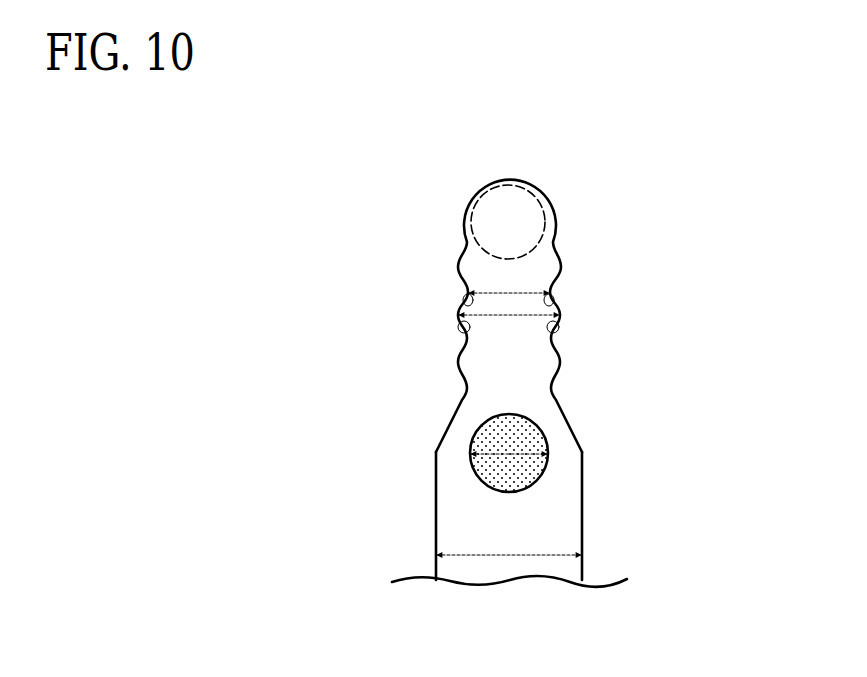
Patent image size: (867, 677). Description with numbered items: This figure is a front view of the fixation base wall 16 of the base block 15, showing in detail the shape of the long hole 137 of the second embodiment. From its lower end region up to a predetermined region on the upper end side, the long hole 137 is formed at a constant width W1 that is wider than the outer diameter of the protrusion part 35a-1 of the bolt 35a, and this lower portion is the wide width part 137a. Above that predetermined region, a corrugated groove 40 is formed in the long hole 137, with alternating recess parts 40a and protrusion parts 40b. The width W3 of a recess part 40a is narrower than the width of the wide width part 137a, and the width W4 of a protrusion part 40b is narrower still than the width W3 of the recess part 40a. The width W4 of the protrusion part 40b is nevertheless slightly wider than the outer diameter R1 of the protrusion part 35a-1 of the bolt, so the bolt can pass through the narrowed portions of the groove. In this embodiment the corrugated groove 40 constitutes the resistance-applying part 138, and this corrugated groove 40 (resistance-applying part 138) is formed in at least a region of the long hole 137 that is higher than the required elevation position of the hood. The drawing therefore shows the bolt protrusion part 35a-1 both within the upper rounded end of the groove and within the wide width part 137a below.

The fixation base wall 16 is at (433, 235).
The base block 15 is at (506, 365).
The protrusion part of the bolt 35a-1 is at (552, 237).
The bolt 35a is at (624, 338).
The corrugated groove 40 is at (483, 353).
The resistance-applying part 138 is at (483, 353).
The recess part 40a is at (470, 355).
The protrusion part of the corrugated groove 40b is at (465, 302).
The long hole 137 is at (445, 516).
The wide width part 137a is at (437, 524).
The width of the wide width part W1 is at (512, 560).
The width of the recess part W3 is at (517, 318).
The width of the protrusion part W4 is at (515, 292).
The outer diameter of the protrusion part R1 is at (512, 455).